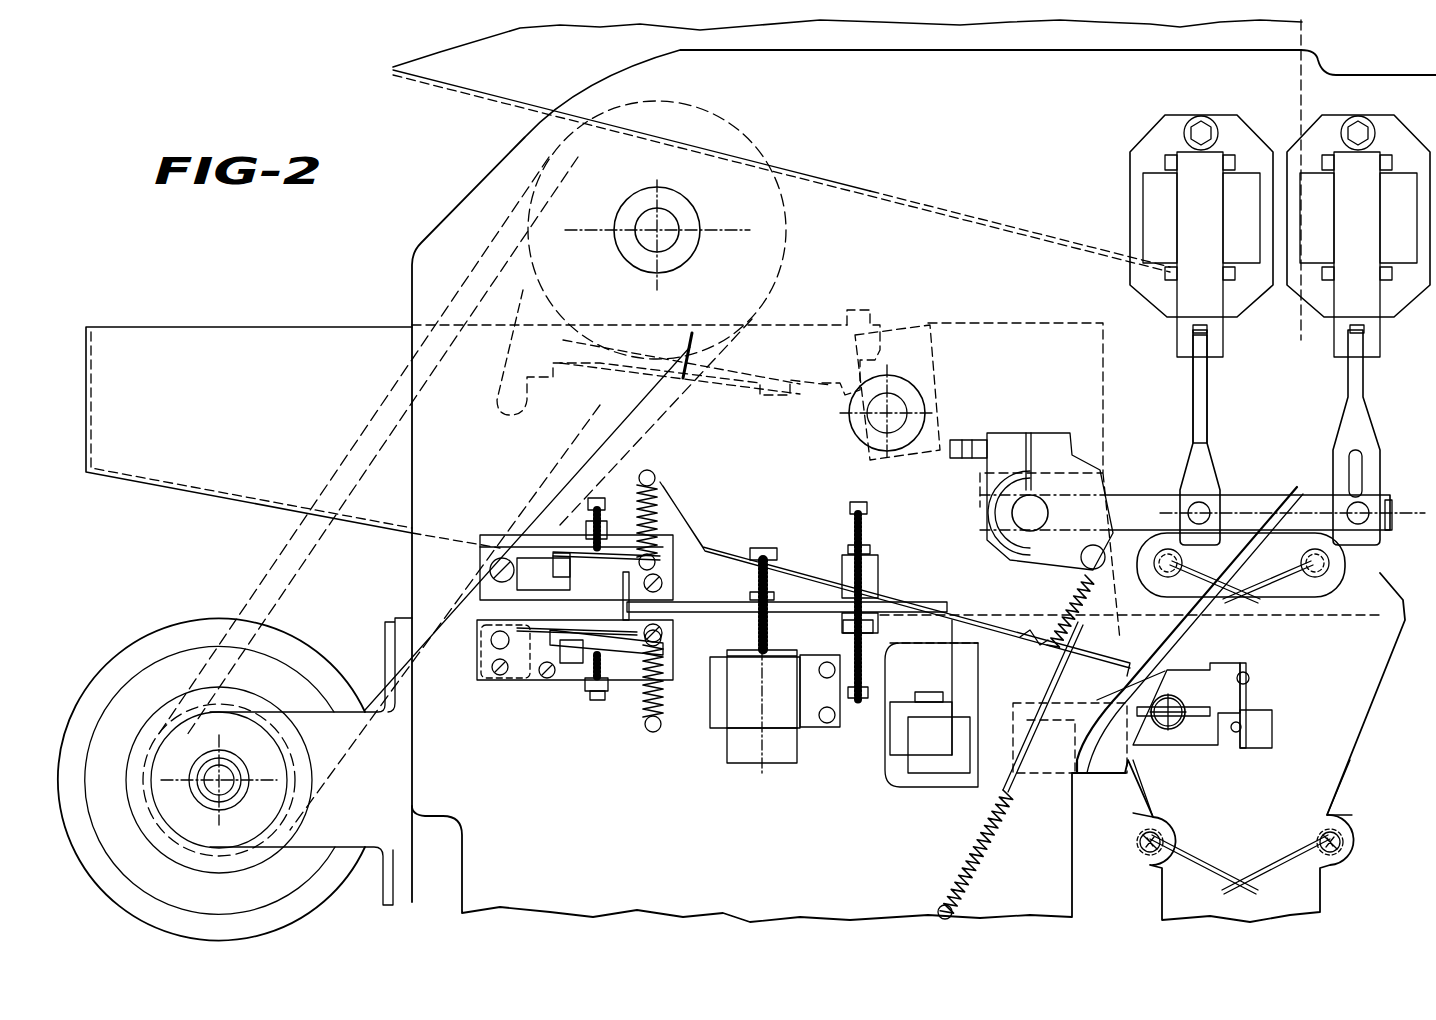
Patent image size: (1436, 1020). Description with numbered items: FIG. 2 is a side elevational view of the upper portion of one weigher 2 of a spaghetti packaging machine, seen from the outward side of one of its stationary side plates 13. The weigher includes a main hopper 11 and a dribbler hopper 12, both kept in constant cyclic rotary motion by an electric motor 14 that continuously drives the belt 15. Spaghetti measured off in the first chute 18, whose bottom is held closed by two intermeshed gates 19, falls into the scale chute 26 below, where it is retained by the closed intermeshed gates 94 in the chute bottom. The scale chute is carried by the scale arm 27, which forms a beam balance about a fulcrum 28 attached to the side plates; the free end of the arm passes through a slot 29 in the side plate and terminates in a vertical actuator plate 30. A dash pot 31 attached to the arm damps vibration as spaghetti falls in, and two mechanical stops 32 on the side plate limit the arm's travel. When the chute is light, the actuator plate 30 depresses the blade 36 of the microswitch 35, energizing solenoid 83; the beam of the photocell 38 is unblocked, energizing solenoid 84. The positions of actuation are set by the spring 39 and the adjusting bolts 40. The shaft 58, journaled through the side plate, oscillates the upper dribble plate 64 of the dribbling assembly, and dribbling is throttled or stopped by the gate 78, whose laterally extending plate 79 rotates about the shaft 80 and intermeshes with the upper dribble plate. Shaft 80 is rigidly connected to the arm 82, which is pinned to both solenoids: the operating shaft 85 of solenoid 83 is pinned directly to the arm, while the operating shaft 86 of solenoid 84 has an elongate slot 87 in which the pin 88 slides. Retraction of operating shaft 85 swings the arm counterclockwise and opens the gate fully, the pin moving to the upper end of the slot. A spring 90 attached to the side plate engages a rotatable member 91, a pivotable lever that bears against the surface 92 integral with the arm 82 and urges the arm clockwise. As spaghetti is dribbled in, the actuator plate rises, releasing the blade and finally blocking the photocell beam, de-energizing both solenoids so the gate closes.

The weigher 2 is at (434, 209).
The main hopper 11 is at (497, 88).
The dribbler hopper 12 is at (305, 327).
The side plates 13 is at (1058, 892).
The electric motor 14 is at (180, 626).
The belt 15 is at (282, 560).
The first chute 18 is at (1213, 412).
The intermeshed gates 19 is at (1280, 570).
The scale chute 26 is at (1352, 713).
The scale arm 27 is at (945, 680).
The fulcrum 28 is at (1175, 722).
The slot 29 is at (905, 782).
The actuator plate 30 is at (627, 603).
The dash pot 31 is at (735, 760).
The mechanical stops 32 is at (866, 550).
The microswitch 35 is at (520, 690).
The blade 36 is at (572, 628).
The photocell 38 is at (500, 556).
The spring 39 is at (660, 520).
The adjusting bolts 40 is at (598, 498).
The shaft 58 is at (870, 420).
The upper dribble plate 64 is at (1005, 615).
The gate 78 is at (1102, 362).
The laterally extending plate 79 is at (1165, 640).
The shaft 80 is at (1015, 520).
The arm 82 is at (1160, 470).
The solenoid 83 is at (1138, 182).
The solenoid 84 is at (1400, 133).
The operating shaft 85 is at (1193, 372).
The operating shaft 86 is at (1362, 380).
The elongate slot 87 is at (1365, 465).
The pin 88 is at (1365, 520).
The spring 90 is at (985, 840).
The rotatable member 91 is at (1000, 436).
The surface 92 is at (1030, 433).
The intermeshed gates 94 is at (1278, 860).